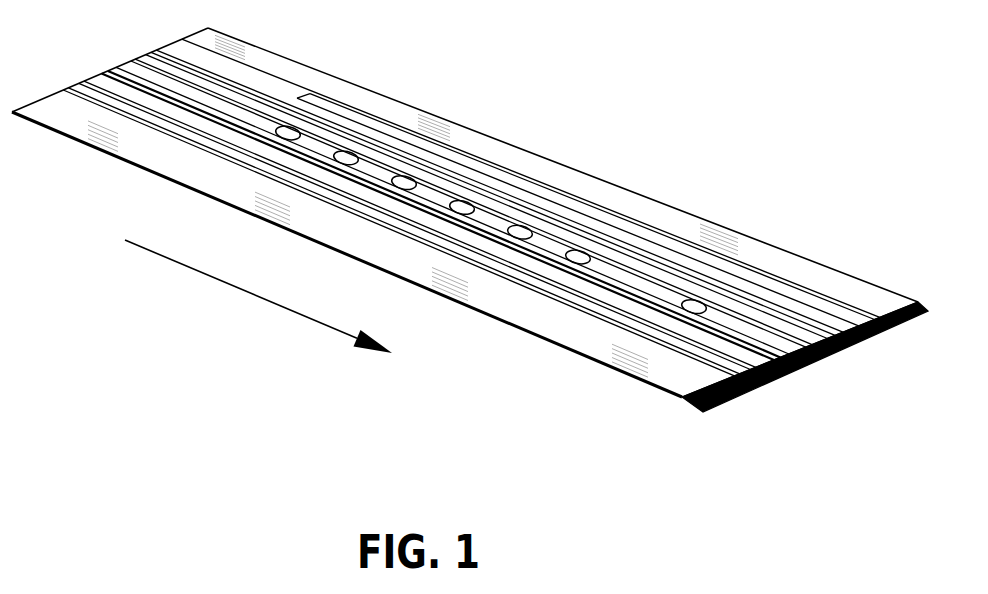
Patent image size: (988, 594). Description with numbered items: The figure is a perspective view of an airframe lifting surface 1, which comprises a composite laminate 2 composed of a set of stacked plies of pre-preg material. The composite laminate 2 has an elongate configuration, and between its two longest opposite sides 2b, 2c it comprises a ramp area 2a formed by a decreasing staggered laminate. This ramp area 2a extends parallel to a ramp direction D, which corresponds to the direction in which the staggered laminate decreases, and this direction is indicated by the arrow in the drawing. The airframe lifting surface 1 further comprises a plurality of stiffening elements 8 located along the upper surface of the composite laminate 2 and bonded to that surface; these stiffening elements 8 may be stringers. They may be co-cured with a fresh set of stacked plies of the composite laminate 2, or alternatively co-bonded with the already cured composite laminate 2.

The airframe lifting surface 1 is at (470, 246).
The composite laminate 2 is at (470, 248).
The ramp area 2a is at (765, 390).
The longest opposite side 2b is at (143, 185).
The longest opposite side 2c is at (375, 78).
The stiffening elements 8 is at (646, 248).
The ramp direction D is at (258, 296).